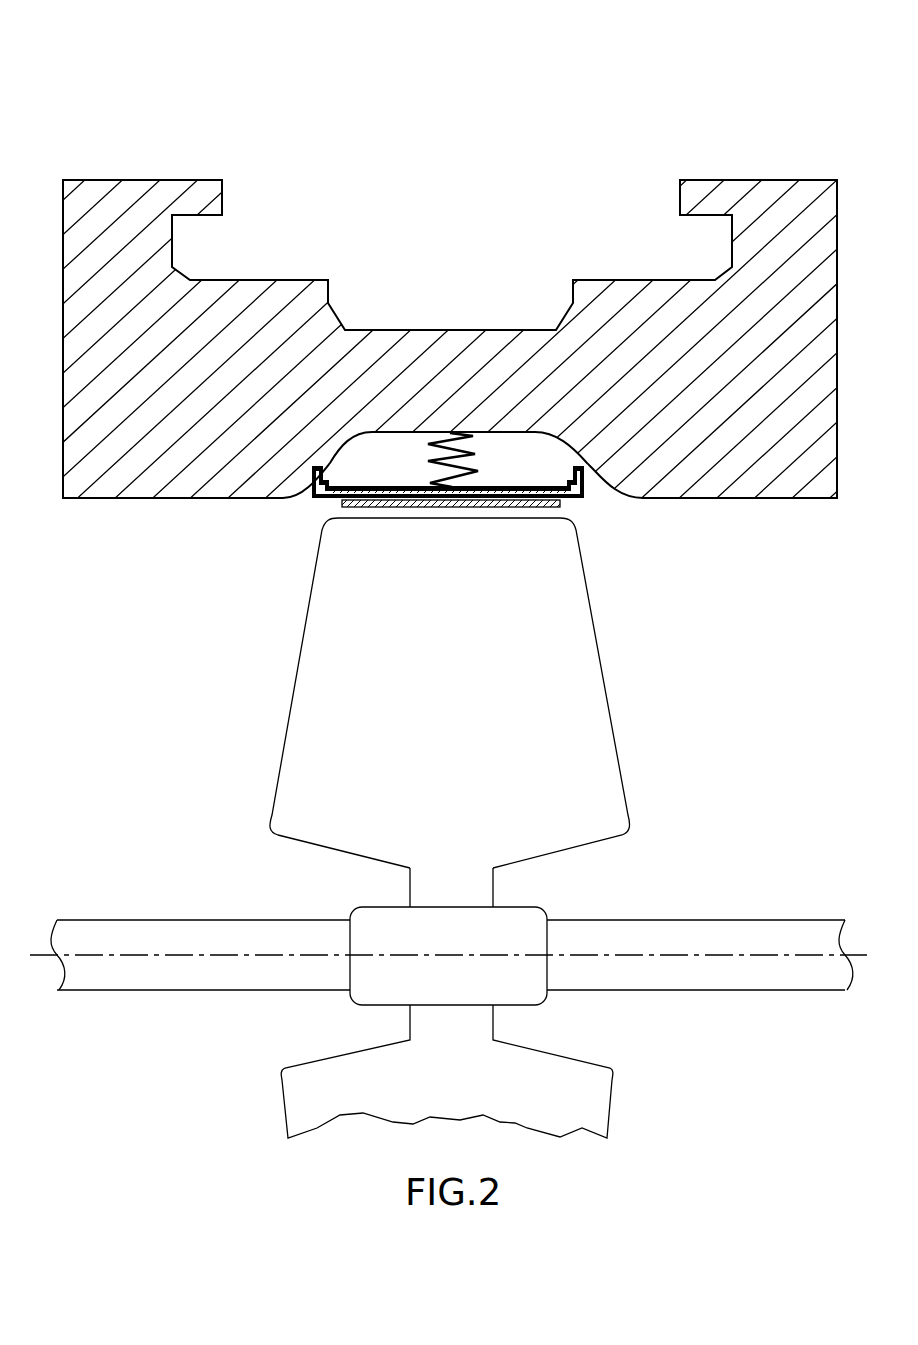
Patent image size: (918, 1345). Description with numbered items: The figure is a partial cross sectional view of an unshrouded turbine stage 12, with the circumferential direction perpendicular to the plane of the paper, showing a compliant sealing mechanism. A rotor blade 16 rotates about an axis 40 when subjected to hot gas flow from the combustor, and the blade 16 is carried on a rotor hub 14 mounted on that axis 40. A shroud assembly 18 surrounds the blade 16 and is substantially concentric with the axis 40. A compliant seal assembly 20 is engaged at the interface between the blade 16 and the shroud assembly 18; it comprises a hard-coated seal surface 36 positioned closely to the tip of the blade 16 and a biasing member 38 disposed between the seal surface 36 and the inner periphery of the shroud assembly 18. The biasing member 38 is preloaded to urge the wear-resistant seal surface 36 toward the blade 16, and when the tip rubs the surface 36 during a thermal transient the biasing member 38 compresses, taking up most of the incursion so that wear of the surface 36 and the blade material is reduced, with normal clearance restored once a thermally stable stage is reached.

The unshrouded turbine stage 12 is at (708, 58).
The rotor hub 14 is at (574, 902).
The rotor blade 16 is at (300, 668).
The shroud assembly 18 is at (452, 345).
The compliant seal assembly 20 is at (318, 500).
The hard-coated seal surface 36 is at (567, 508).
The biasing member 38 is at (427, 462).
The axis 40 is at (158, 955).